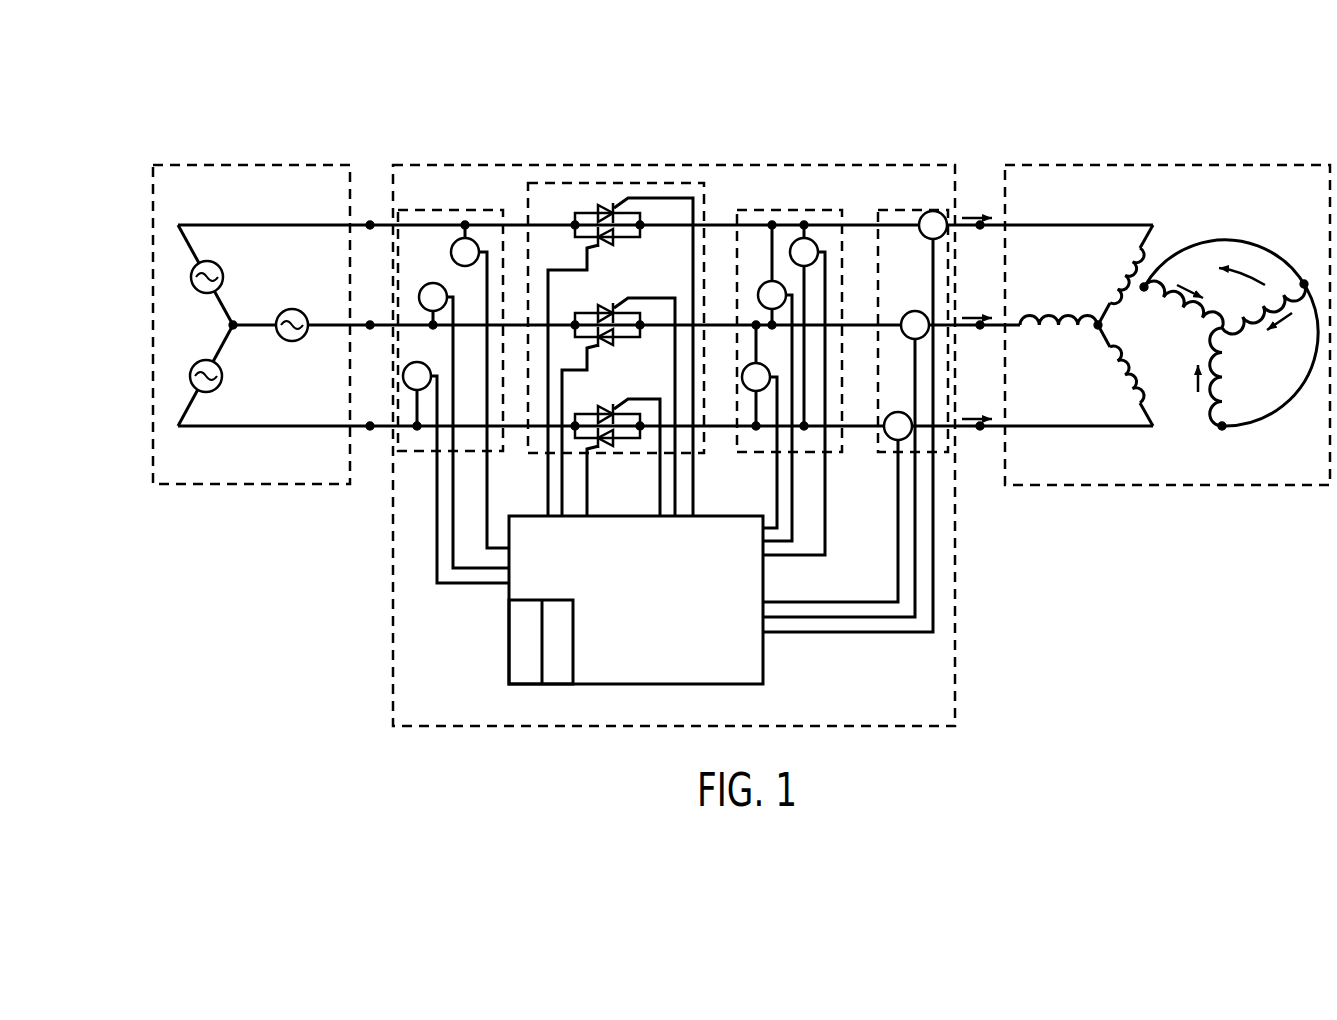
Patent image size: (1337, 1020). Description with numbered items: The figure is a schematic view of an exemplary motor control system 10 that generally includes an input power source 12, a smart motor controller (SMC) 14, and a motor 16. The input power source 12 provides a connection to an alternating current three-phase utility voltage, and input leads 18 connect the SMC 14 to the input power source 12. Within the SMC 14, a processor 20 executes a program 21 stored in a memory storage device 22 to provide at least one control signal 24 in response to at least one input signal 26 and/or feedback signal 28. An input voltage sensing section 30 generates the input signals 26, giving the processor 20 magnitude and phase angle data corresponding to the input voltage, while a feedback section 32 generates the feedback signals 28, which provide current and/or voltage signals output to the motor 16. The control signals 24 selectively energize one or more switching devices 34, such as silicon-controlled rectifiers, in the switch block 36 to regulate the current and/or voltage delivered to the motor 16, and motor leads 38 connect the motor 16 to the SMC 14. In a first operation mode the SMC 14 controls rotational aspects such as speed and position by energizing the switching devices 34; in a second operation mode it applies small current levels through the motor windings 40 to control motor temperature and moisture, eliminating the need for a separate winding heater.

The motor control system 10 is at (232, 80).
The input power source 12 is at (245, 165).
The smart motor controller 14 is at (420, 165).
The motor 16 is at (1167, 298).
The input leads 18 is at (364, 183).
The processor 20 is at (612, 618).
The program 21 is at (557, 678).
The memory storage device 22 is at (521, 647).
The control signal 24 is at (654, 493).
The input signal 26 is at (433, 553).
The feedback signal 28 is at (892, 518).
The input voltage sensing section 30 is at (455, 210).
The feedback section 32 is at (950, 200).
The switching devices 34 is at (610, 252).
The switch block 36 is at (616, 321).
The motor leads 38 is at (975, 178).
The motor windings 40 is at (1103, 262).